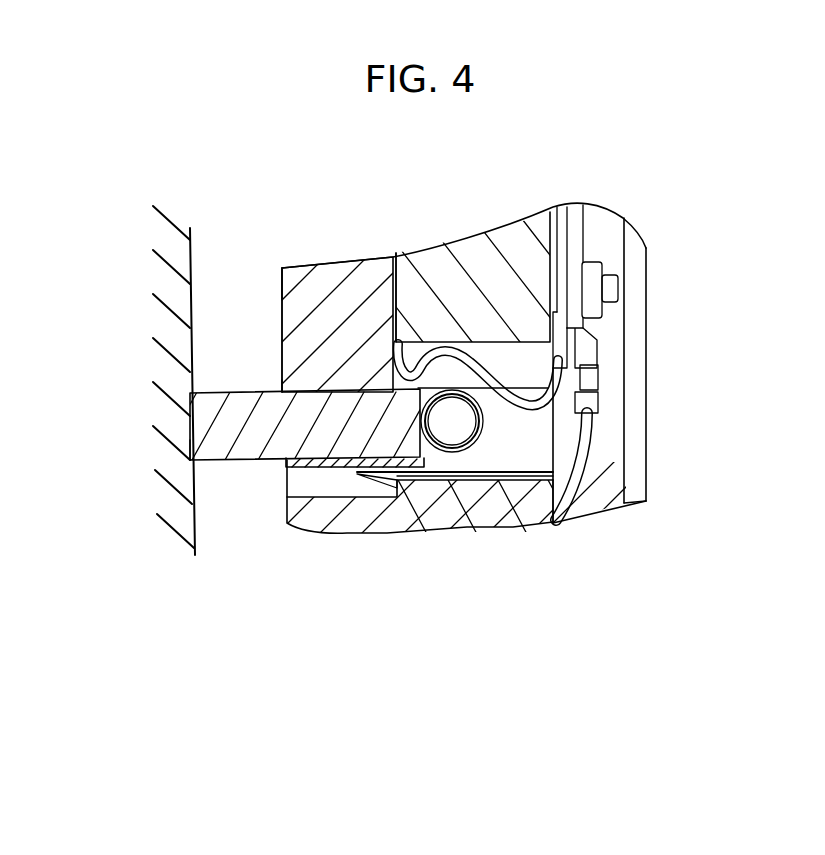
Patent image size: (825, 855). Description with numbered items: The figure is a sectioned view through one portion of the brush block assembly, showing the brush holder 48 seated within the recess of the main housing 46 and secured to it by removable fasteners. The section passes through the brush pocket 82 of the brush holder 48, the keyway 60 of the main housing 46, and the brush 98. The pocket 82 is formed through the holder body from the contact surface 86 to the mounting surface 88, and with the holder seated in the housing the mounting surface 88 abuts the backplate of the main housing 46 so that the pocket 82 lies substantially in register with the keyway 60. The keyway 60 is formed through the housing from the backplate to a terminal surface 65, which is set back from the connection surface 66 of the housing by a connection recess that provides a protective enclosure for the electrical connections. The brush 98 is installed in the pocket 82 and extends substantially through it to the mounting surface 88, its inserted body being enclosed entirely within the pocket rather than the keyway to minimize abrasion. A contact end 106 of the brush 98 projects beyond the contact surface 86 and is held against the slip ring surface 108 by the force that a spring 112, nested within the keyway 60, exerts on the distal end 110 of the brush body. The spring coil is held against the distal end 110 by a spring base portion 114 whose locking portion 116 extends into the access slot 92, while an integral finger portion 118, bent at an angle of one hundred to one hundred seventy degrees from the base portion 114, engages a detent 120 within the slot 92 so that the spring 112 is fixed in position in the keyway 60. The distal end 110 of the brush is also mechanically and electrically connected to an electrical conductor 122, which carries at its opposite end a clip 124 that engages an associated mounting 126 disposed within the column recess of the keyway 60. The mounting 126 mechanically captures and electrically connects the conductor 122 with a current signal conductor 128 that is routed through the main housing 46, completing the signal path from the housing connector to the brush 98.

The main housing 46 is at (515, 247).
The brush holder 48 is at (298, 303).
The keyway 60 is at (537, 420).
The terminal surface 65 is at (583, 498).
The connection surface 66 is at (694, 285).
The brush pocket 82 is at (282, 387).
The contact surface 86 is at (282, 337).
The mounting surface 88 is at (393, 287).
The access slot 92 is at (285, 489).
The brush 98 is at (190, 461).
The contact end 106 is at (189, 390).
The slip ring surface 108 is at (195, 556).
The distal end 110 is at (300, 286).
The spring 112 is at (490, 440).
The spring base portion 114 is at (450, 473).
The locking portion 116 is at (350, 477).
The finger portion 118 is at (367, 485).
The detent 120 is at (400, 490).
The electrical conductor 122 is at (415, 375).
The clip 124 is at (563, 345).
The mounting 126 is at (630, 272).
The current signal conductor 128 is at (580, 475).